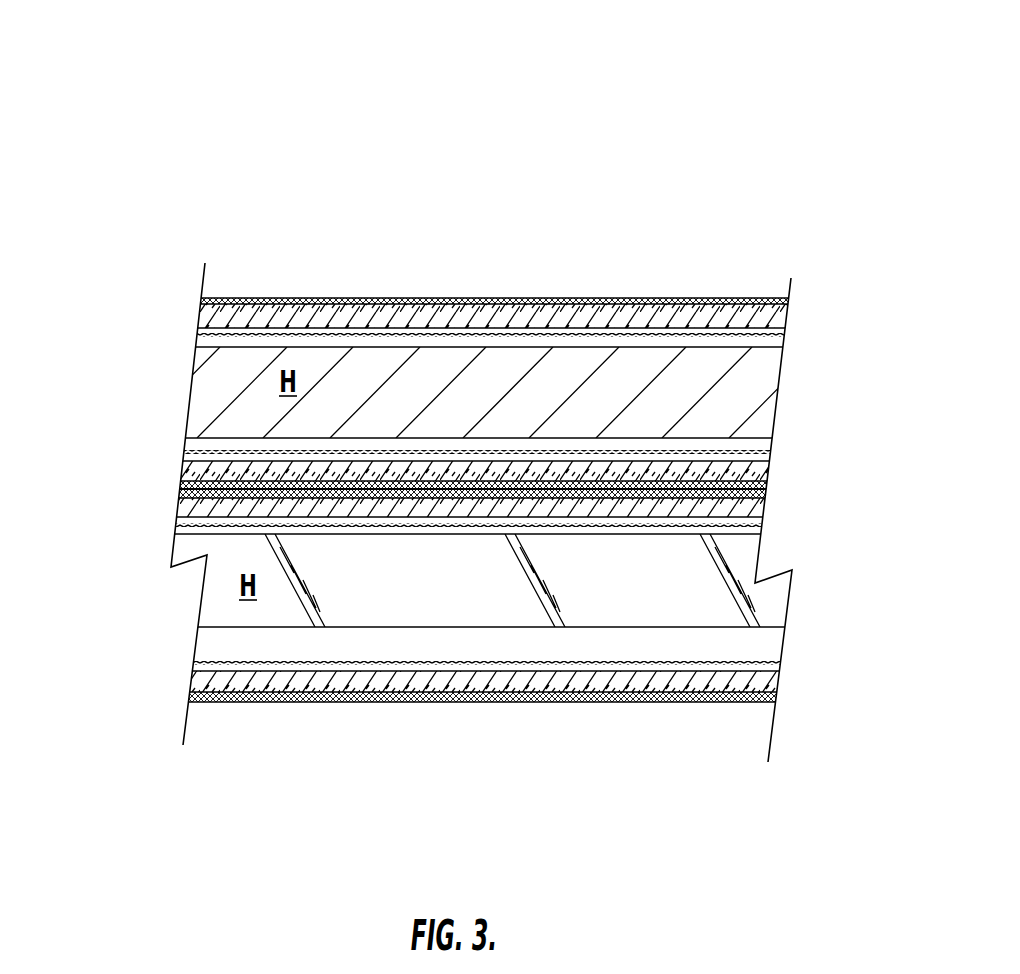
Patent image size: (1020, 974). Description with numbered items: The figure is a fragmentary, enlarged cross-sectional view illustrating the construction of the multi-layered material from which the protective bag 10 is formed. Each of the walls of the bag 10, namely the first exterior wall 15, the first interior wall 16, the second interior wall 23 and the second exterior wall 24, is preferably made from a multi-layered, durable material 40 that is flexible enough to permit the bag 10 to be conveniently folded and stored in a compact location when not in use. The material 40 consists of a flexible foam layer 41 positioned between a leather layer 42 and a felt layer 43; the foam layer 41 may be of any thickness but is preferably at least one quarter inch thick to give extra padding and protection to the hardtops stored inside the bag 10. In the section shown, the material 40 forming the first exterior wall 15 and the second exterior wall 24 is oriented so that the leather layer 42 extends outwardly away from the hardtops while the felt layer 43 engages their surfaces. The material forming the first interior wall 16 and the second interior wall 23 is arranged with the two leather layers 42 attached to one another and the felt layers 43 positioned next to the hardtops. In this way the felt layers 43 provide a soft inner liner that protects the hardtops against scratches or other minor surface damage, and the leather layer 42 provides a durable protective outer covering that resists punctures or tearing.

The bag 10 is at (670, 147).
The first exterior wall 15 is at (663, 297).
The first interior wall 16 is at (738, 462).
The second interior wall 23 is at (737, 525).
The second exterior wall 24 is at (643, 703).
The multi-layered durable material 40 is at (790, 314).
The flexible foam layer 41 is at (203, 313).
The leather layer 42 is at (204, 301).
The felt layer 43 is at (200, 343).